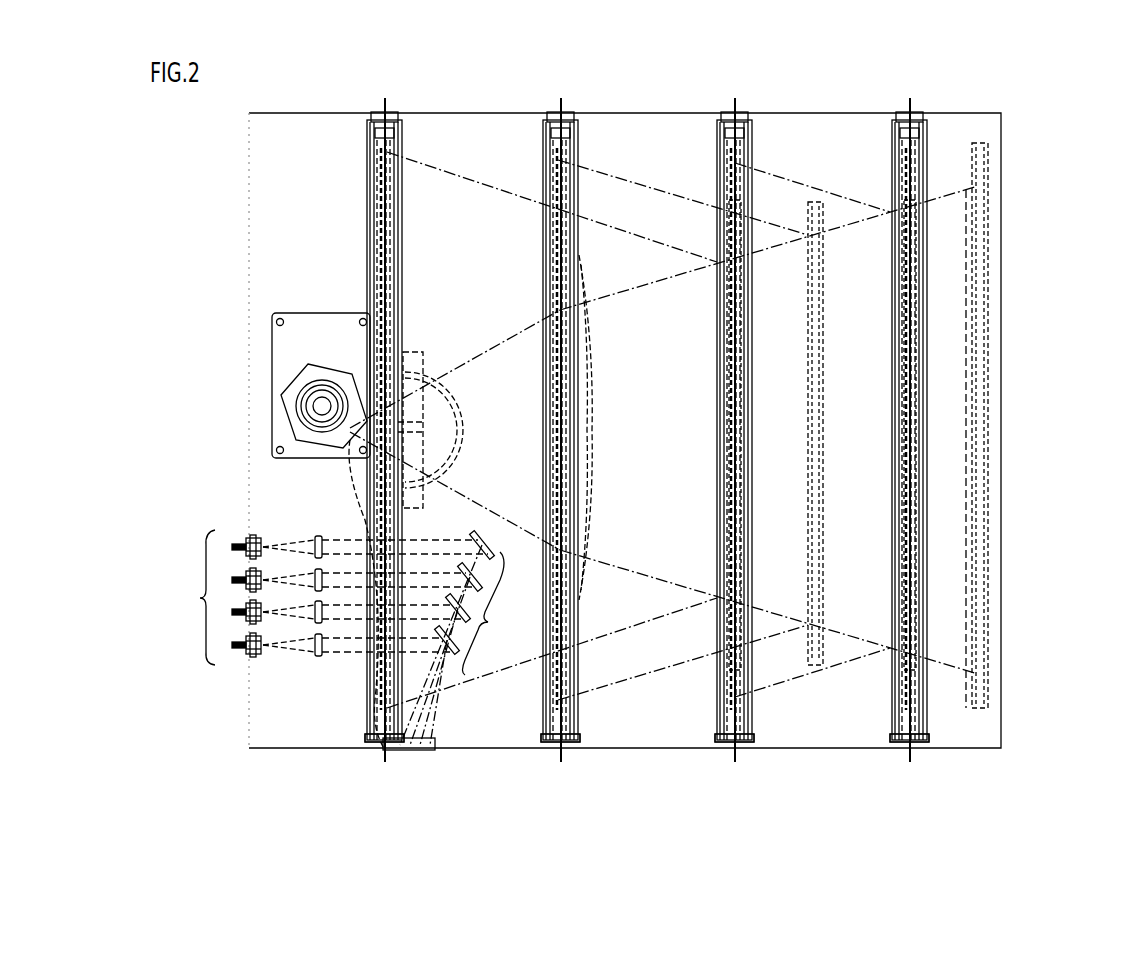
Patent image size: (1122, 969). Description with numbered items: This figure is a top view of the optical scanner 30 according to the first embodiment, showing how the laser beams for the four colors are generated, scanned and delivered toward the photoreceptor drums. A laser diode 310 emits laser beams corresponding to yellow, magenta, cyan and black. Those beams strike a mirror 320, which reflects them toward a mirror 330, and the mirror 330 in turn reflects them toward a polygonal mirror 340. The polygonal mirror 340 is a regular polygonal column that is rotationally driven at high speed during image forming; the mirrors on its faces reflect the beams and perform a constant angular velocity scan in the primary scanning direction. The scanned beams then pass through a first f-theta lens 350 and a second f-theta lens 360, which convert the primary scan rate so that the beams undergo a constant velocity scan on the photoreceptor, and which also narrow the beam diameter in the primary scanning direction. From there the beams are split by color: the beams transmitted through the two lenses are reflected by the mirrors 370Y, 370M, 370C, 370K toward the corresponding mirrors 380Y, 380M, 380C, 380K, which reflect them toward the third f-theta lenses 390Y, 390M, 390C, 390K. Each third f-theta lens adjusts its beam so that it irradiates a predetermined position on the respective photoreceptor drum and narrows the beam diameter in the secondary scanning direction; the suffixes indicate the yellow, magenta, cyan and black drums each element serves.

The optical scanner 30 is at (1032, 104).
The laser diode 310 is at (245, 597).
The mirror 320 is at (423, 638).
The mirror 330 is at (435, 745).
The polygonal mirror 340 is at (290, 395).
The first f-theta lens 350 is at (412, 370).
The second f-theta lens 360 is at (585, 470).
The mirror 370Y is at (738, 368).
The mirror 370M is at (818, 312).
The mirror 370C is at (892, 655).
The mirror 370K is at (988, 445).
The mirror 380Y is at (372, 748).
The mirror 380M is at (548, 748).
The mirror 380C is at (722, 748).
The mirror 380K is at (897, 748).
The third f-theta lens 390Y is at (388, 112).
The third f-theta lens 390M is at (563, 112).
The third f-theta lens 390C is at (738, 112).
The third f-theta lens 390K is at (913, 112).